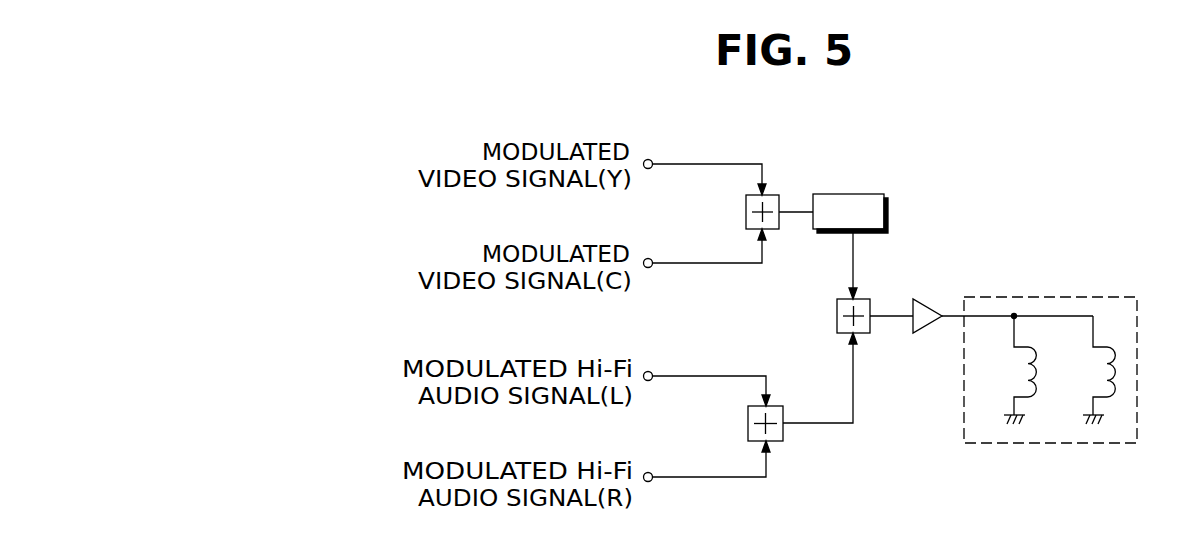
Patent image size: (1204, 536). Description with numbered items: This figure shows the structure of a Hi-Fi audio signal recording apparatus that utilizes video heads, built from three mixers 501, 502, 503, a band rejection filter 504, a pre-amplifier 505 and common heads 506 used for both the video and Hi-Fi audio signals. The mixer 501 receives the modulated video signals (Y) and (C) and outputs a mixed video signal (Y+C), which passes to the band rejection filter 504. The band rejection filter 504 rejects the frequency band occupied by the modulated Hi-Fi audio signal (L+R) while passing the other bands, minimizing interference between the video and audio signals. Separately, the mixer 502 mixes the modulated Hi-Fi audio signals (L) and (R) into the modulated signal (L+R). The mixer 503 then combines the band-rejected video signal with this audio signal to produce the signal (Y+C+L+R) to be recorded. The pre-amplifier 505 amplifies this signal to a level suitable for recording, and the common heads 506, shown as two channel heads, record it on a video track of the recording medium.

The mixer 501 is at (776, 195).
The mixer 502 is at (777, 406).
The mixer 503 is at (870, 299).
The band rejection filter (BRF) 504 is at (862, 193).
The pre-amplifier 505 is at (925, 326).
The common heads 506 is at (1095, 296).